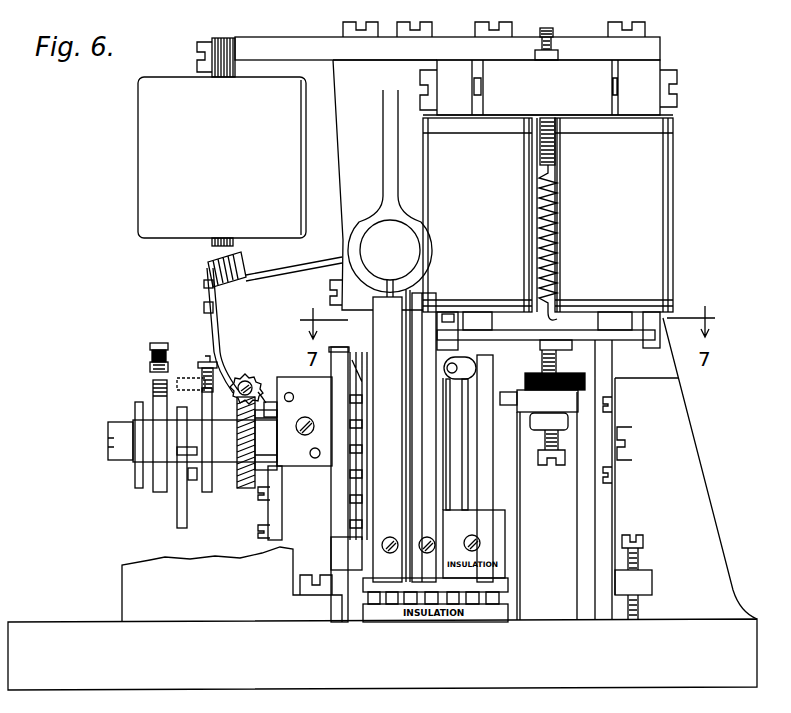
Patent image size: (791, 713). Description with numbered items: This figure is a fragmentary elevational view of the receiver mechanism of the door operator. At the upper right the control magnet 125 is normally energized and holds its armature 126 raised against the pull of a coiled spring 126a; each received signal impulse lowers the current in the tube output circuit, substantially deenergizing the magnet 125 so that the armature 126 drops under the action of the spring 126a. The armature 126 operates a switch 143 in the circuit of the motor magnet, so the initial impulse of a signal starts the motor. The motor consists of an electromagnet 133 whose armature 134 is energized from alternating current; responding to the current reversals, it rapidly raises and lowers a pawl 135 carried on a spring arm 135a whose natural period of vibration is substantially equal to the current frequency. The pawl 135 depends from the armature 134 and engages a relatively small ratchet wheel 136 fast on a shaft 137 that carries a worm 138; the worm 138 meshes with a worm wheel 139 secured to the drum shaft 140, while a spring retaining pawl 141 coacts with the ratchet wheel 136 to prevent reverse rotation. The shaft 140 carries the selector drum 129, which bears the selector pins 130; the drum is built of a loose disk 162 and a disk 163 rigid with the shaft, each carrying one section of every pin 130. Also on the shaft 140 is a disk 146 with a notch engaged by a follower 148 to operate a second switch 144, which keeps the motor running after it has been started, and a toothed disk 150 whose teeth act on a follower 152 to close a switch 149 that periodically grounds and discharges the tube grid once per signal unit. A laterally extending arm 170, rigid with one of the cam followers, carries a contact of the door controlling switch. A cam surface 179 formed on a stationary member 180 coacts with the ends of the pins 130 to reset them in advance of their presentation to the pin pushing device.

The magnet 125 is at (437, 258).
The armature 126 is at (557, 338).
The coiled spring 126a is at (605, 215).
The drum 129 is at (318, 368).
The pins 130 is at (374, 364).
The electromagnet 133 is at (145, 196).
The armature 134 is at (208, 262).
The pawl 135 is at (216, 338).
The spring arm 135a is at (294, 278).
The ratchet wheel 136 is at (242, 380).
The shaft 137 is at (251, 384).
The worm 138 is at (192, 432).
The worm wheel 139 is at (242, 489).
The shaft 140 is at (268, 447).
The spring retaining pawl 141 is at (278, 408).
The switch 143 is at (556, 363).
The second switch 144 is at (210, 362).
The disk 146 is at (203, 485).
The follower 148 is at (200, 378).
The switch 149 is at (150, 372).
The disk 150 is at (160, 492).
The follower 152 is at (153, 392).
The disk 162 is at (472, 427).
The disk 163 is at (450, 468).
The arm 170 is at (450, 374).
The cam surface 179 is at (355, 360).
The stationary member 180 is at (337, 496).